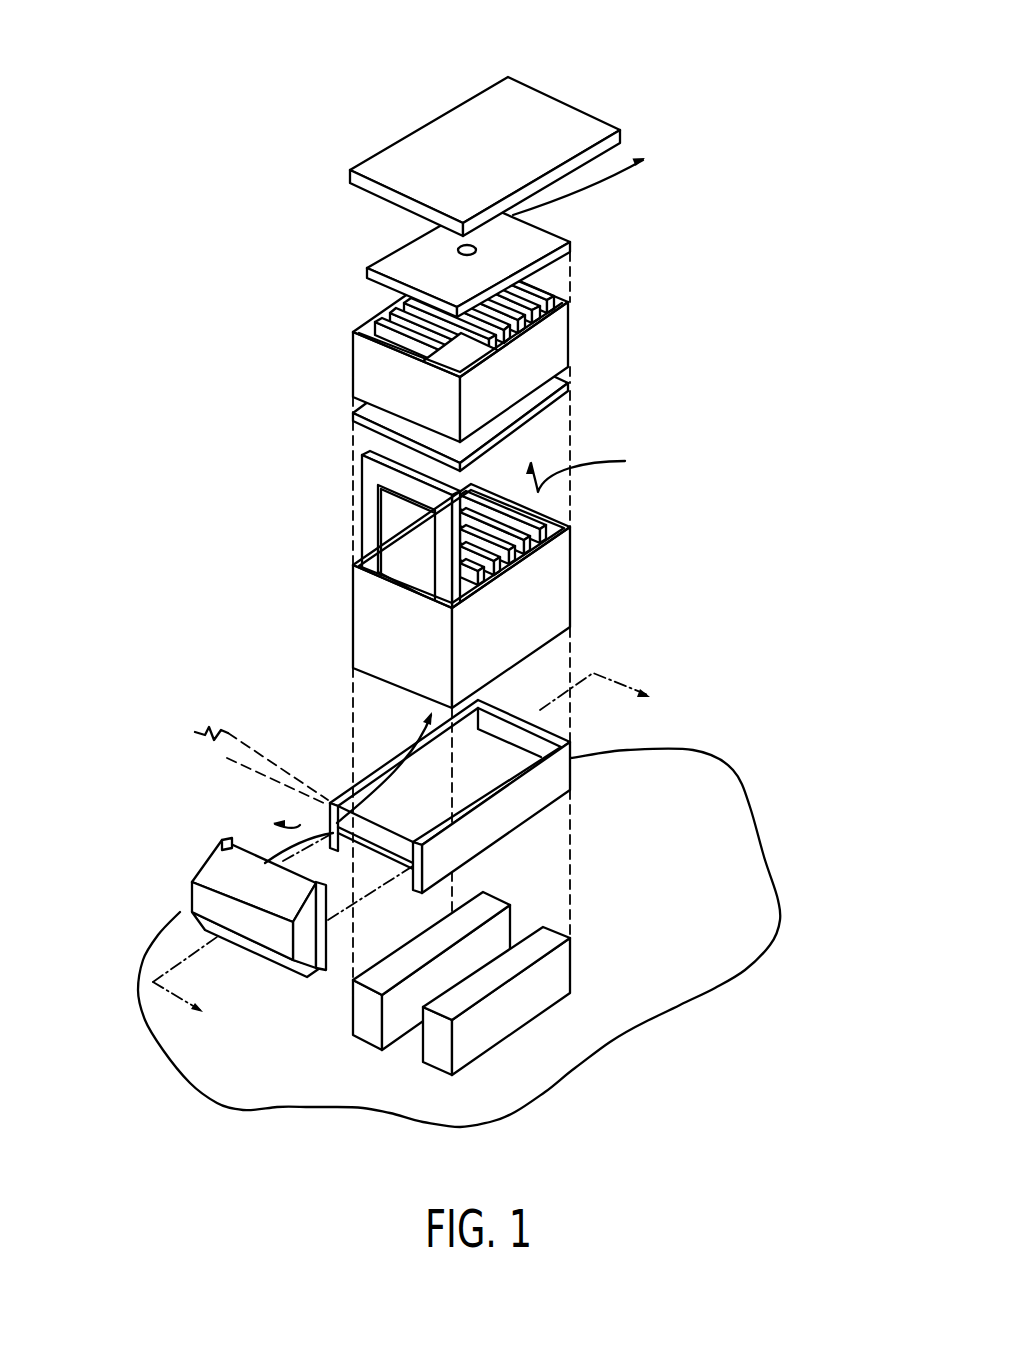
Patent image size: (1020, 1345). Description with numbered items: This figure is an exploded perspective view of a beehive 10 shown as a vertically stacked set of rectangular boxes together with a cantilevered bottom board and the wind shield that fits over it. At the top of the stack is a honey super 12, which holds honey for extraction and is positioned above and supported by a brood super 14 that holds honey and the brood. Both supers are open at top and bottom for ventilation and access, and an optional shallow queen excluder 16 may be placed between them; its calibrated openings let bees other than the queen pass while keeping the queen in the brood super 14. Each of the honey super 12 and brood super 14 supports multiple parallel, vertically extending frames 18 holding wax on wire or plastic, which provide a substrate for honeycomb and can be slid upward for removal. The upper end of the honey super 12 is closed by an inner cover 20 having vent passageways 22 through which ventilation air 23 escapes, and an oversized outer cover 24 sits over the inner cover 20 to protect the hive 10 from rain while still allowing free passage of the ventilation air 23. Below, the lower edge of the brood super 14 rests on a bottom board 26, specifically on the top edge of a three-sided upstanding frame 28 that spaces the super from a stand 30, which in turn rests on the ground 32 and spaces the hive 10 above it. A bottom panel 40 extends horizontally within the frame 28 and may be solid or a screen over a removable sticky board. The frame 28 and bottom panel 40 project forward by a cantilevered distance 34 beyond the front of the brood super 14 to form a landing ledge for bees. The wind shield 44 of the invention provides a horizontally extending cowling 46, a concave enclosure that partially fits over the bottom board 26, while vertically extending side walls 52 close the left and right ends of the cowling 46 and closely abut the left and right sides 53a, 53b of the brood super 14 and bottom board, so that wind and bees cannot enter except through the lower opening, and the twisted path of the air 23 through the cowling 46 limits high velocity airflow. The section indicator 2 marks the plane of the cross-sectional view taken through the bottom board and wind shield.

The beehive 10 is at (686, 60).
The honey super 12 is at (575, 330).
The brood super 14 is at (473, 596).
The queen excluder 16 is at (575, 392).
The frames 18 is at (390, 310).
The inner cover 20 is at (515, 260).
The vent passageways 22 is at (455, 248).
The ventilation air 23 is at (603, 172).
The outer cover 24 is at (468, 167).
The bottom board 26 is at (528, 796).
The upstanding frame 28 is at (547, 786).
The stand 30 is at (485, 893).
The ground 32 is at (690, 960).
The cantilevered distance 34 is at (243, 764).
The bottom panel 40 is at (518, 752).
The wind shield 44 is at (191, 934).
The cowling 46 is at (268, 900).
The side walls 52 is at (191, 845).
The left side of brood super 53a is at (320, 615).
The right side of brood super 53b is at (510, 605).
The section line 2- 2 is at (410, 859).